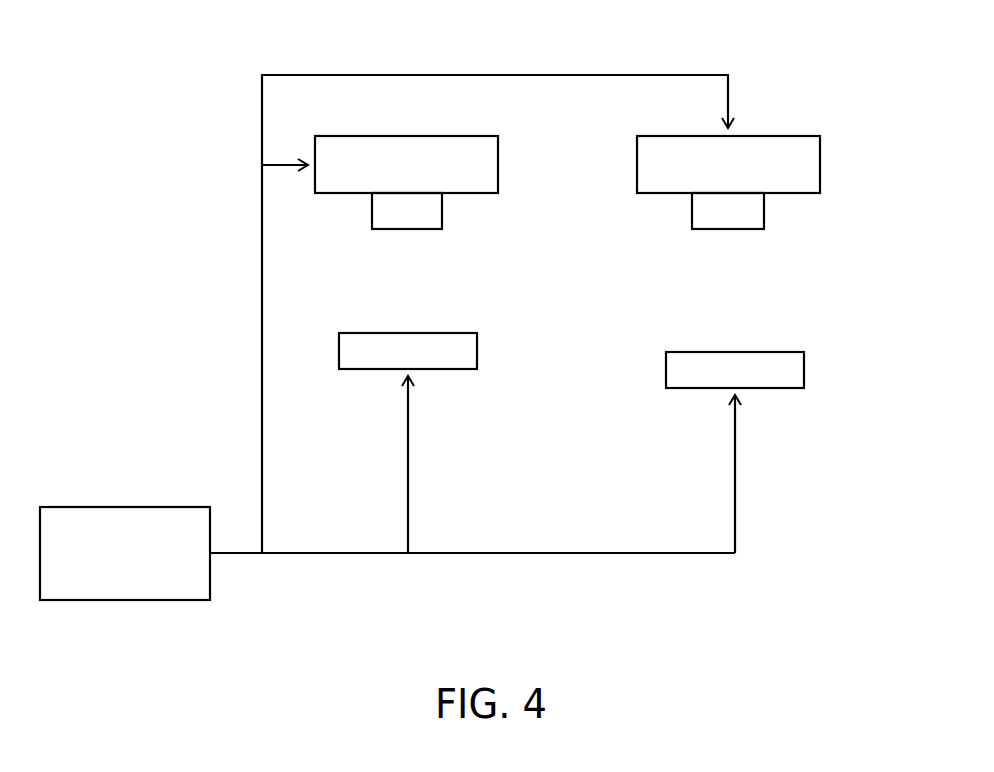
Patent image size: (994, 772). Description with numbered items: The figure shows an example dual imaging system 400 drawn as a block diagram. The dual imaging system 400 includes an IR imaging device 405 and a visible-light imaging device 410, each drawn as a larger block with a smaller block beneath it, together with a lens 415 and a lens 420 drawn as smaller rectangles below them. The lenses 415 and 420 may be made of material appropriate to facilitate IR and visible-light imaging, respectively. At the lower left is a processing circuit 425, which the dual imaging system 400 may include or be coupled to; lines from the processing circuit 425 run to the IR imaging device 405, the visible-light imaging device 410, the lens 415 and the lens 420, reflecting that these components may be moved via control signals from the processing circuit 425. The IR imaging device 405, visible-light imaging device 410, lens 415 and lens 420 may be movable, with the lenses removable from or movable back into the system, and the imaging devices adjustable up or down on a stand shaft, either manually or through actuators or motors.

The dual imaging system 400 is at (180, 47).
The IR imaging device 405 is at (822, 158).
The visible-light imaging device 410 is at (498, 157).
The lens 415 is at (805, 369).
The lens 420 is at (478, 350).
The processing circuit 425 is at (108, 506).